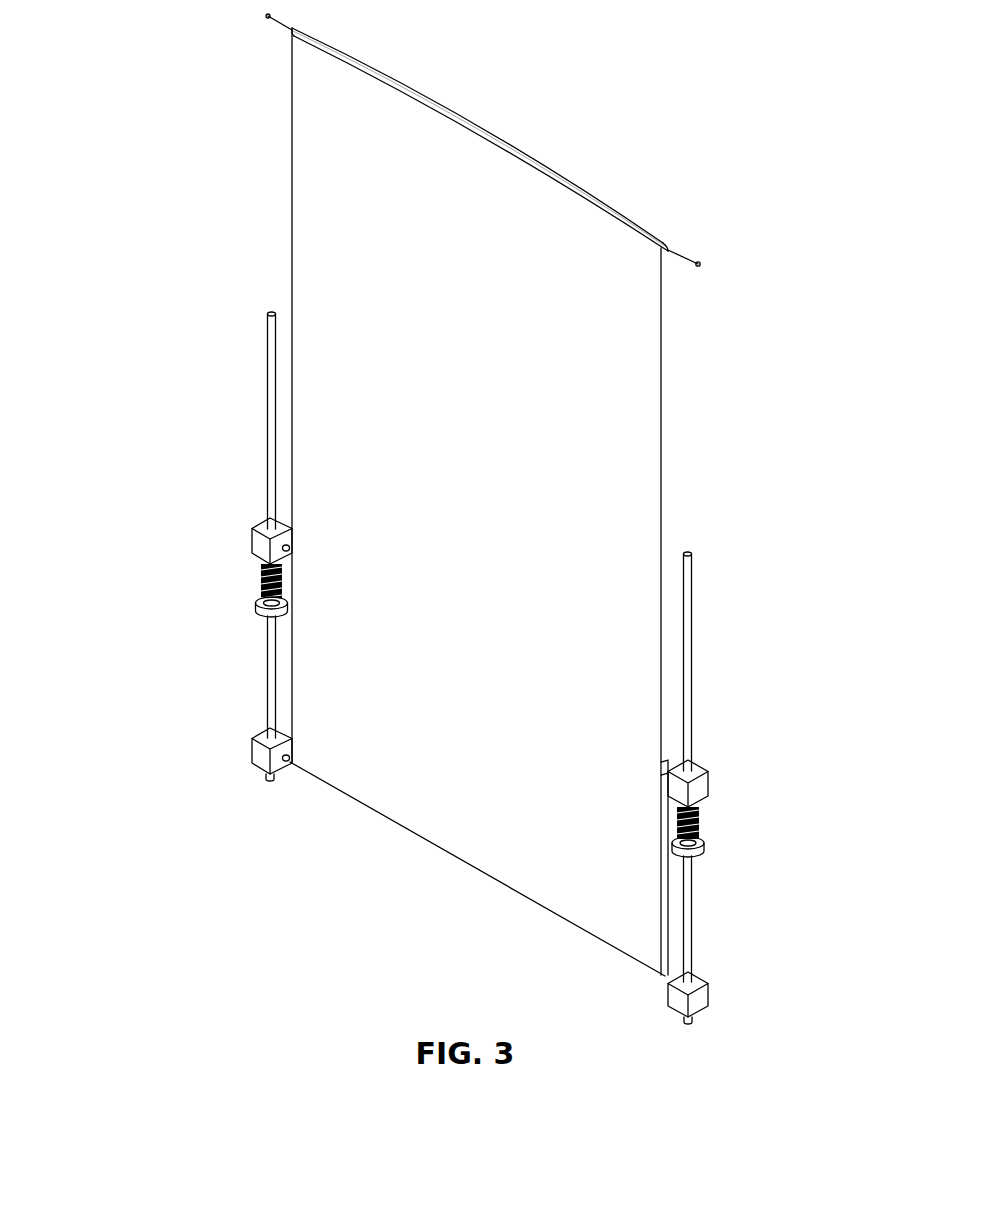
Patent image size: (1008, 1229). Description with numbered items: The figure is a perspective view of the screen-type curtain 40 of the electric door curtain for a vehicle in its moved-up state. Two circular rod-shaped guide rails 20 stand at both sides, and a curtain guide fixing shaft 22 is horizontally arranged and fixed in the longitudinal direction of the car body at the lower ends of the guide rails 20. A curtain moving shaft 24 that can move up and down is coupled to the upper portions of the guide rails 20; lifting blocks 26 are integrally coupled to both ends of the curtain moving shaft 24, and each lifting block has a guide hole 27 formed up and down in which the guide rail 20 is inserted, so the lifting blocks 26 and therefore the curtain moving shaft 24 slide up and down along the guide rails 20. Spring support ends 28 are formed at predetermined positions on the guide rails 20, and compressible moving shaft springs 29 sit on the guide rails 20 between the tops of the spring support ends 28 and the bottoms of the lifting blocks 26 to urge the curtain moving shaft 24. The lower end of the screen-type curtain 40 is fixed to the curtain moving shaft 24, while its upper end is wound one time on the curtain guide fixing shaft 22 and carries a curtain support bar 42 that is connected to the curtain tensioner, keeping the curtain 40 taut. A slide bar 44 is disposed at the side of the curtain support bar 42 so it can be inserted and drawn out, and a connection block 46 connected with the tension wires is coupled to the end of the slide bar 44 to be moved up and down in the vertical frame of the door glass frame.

The guide rail 20 is at (272, 371).
The curtain guide fixing shaft 22 is at (287, 765).
The curtain moving shaft 24 is at (288, 546).
The lifting block 26 is at (262, 543).
The guide hole 27 is at (688, 755).
The spring support end 28 is at (706, 848).
The moving shaft spring 29 is at (701, 799).
The screen-type curtain 40 is at (638, 491).
The curtain support bar 42 is at (500, 148).
The slide bar 44 is at (685, 250).
The connection block 46 is at (703, 262).